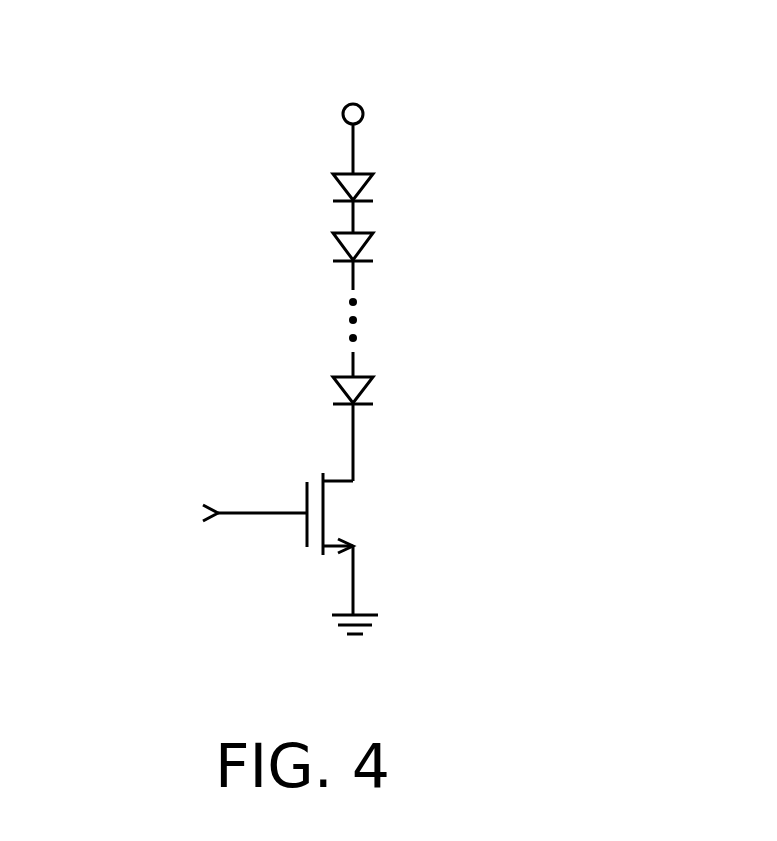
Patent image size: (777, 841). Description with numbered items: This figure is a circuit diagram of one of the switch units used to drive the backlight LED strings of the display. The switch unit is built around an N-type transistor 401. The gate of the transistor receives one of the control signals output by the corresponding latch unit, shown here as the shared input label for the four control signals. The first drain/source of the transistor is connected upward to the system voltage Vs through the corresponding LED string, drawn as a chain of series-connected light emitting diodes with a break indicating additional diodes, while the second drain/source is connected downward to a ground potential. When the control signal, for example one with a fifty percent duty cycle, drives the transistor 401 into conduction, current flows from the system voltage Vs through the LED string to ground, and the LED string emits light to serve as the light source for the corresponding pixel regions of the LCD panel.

The N-type transistor 401 is at (342, 516).
The system voltage Vs is at (356, 89).